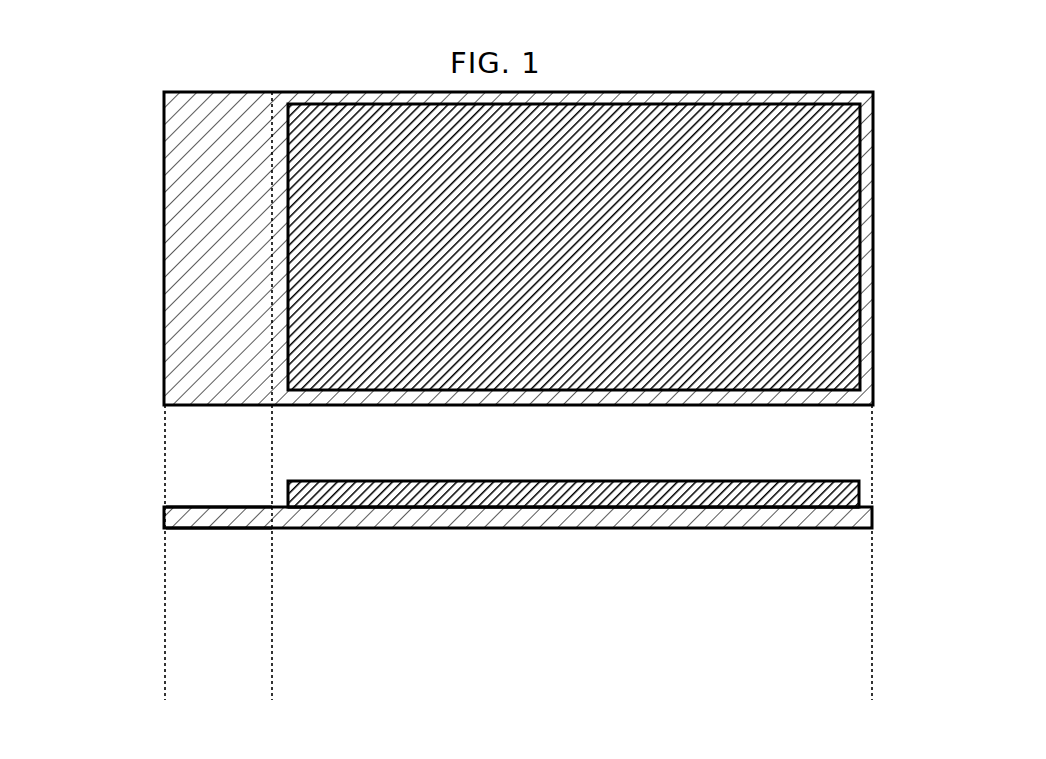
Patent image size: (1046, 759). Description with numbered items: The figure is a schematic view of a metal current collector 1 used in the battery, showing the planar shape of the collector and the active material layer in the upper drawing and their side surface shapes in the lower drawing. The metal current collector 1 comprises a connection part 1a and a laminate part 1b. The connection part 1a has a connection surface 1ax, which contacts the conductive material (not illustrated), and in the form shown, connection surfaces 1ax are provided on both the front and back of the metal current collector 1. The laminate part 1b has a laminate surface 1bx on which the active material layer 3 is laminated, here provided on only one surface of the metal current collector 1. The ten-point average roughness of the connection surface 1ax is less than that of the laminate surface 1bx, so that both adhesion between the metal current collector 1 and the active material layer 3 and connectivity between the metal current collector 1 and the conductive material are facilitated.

The metal current collector 1 is at (164, 230).
The active material layer 3 is at (835, 230).
The connection surface 1ax is at (190, 505).
The laminate surface 1bx is at (645, 504).
The connection part 1a is at (272, 628).
The laminate part 1b is at (872, 628).